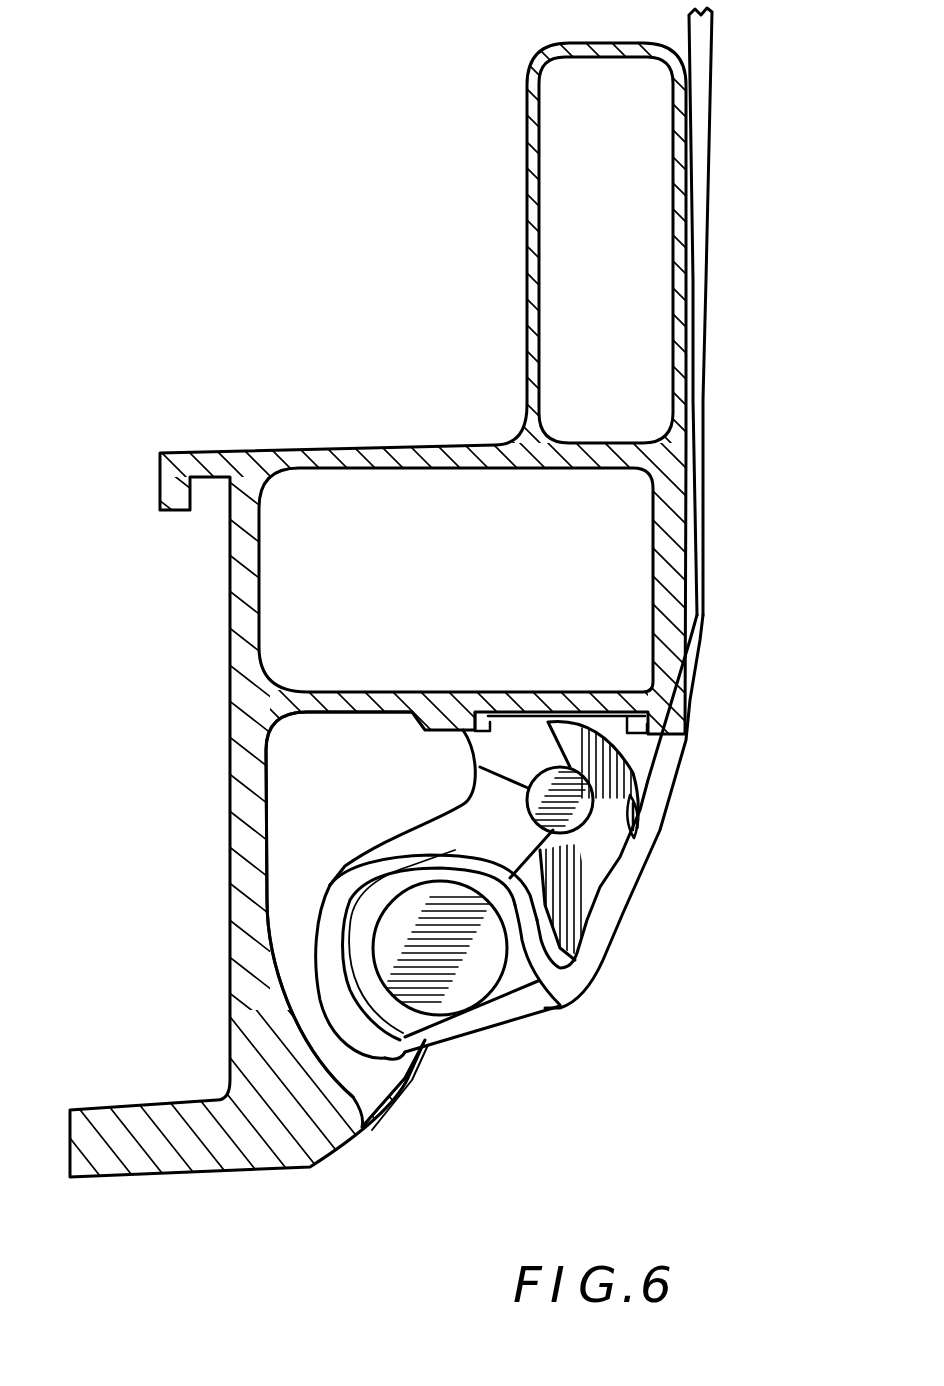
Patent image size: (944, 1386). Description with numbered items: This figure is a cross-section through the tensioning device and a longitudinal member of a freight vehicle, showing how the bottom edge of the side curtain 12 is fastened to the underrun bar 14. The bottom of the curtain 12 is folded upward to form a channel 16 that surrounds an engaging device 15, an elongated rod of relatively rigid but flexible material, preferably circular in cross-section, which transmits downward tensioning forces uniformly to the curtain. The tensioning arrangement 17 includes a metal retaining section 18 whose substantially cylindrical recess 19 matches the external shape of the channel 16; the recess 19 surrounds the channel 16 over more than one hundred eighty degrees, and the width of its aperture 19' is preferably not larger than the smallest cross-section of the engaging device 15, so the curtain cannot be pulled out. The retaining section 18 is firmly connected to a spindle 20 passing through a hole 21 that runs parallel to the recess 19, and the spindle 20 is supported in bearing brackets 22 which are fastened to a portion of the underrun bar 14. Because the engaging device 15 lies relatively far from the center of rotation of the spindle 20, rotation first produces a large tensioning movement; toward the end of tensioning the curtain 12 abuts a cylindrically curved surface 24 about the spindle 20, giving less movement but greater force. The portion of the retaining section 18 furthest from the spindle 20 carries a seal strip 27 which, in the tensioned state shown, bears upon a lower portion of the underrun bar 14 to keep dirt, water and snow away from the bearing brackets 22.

The side curtain 12 is at (692, 278).
The underrun bar 14 is at (180, 1108).
The engaging device 15 is at (487, 950).
The channel 16 is at (537, 1007).
The tensioning arrangement 17 is at (306, 814).
The retaining section 18 is at (373, 842).
The recess 19 is at (409, 943).
The aperture 19' is at (482, 1041).
The spindle 20 is at (583, 797).
The hole 21 is at (470, 796).
The bearing bracket 22 is at (623, 720).
The cylindrically curved surface 24 is at (637, 837).
The seal strip 27 is at (400, 1090).